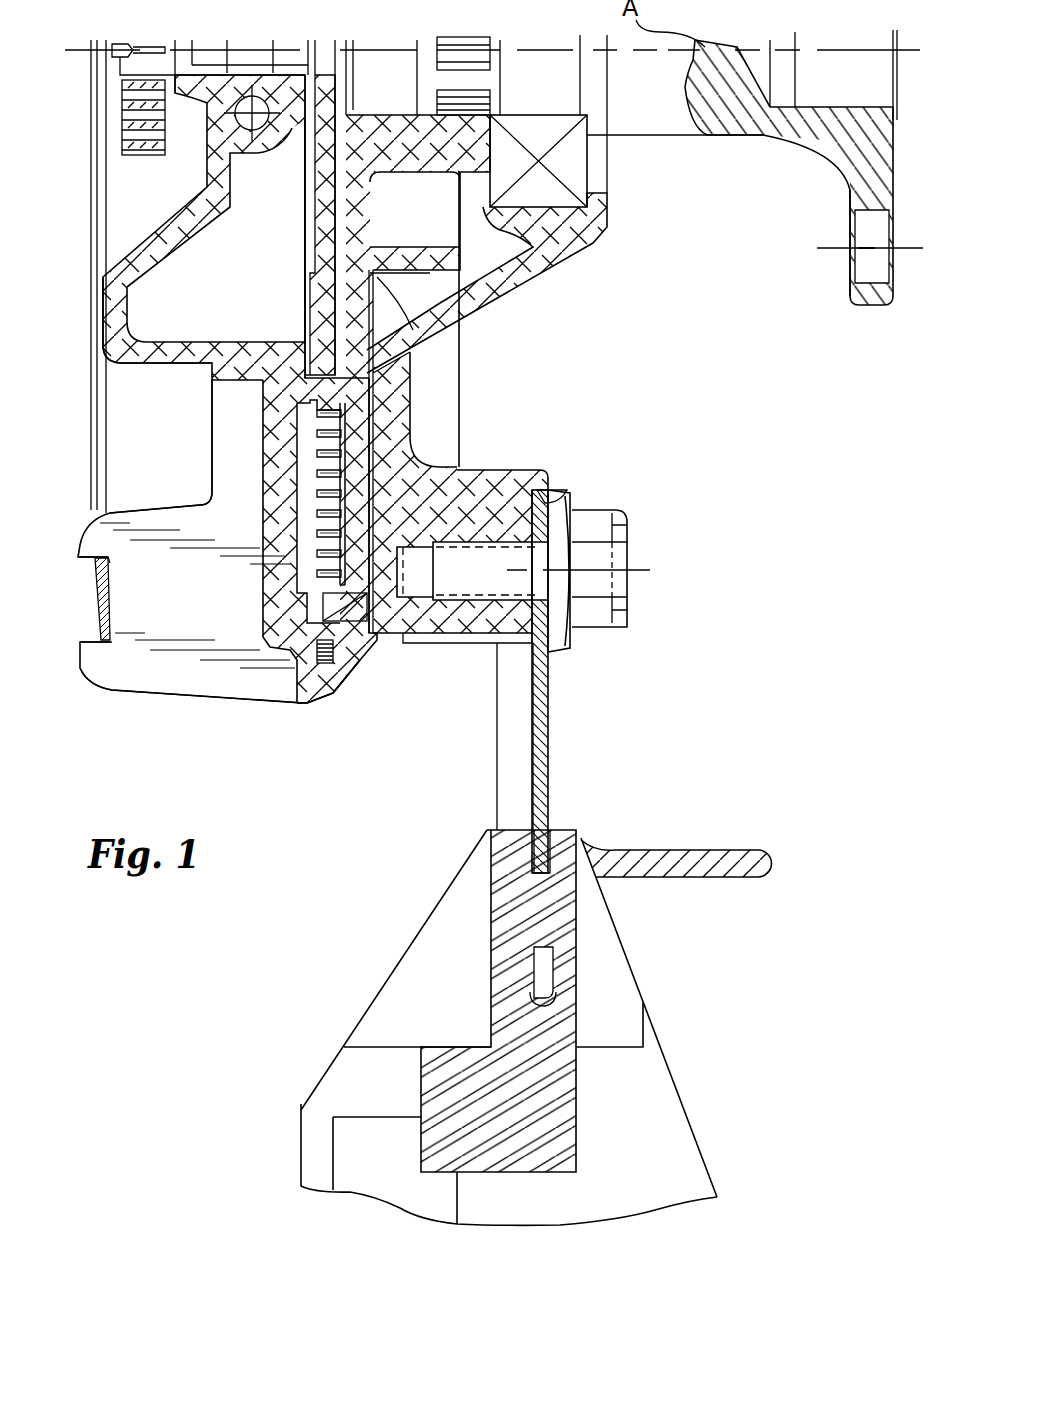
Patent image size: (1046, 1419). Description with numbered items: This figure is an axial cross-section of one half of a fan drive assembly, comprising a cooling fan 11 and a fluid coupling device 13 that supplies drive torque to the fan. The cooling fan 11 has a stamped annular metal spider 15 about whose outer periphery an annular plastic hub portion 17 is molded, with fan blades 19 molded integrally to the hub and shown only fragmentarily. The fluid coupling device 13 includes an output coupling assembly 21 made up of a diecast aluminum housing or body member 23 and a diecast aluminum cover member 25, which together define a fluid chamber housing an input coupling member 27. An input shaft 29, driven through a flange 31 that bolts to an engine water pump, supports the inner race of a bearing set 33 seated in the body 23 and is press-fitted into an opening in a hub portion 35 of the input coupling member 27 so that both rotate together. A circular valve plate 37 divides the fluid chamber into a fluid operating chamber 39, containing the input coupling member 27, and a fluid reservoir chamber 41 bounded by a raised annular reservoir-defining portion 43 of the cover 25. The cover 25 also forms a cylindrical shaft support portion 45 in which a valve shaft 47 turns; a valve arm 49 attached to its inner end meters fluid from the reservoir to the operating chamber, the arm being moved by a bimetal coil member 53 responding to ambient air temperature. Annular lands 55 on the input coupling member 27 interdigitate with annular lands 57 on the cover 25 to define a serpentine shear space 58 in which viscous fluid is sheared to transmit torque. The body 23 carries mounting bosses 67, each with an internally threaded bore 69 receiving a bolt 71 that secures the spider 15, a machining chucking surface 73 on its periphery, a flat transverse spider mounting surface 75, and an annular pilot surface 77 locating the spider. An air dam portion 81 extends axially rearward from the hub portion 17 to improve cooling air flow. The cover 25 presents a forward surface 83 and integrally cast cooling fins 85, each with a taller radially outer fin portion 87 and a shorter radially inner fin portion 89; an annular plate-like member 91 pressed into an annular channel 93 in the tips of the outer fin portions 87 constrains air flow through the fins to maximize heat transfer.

The cooling fan 11 is at (704, 1056).
The fluid coupling device 13 is at (728, 362).
The spider 15 is at (543, 712).
The hub portion 17 is at (514, 936).
The fan blades 19 is at (660, 1180).
The output coupling assembly 21 is at (365, 698).
The housing (body) member 23 is at (547, 270).
The cover member 25 is at (263, 500).
The input coupling member 27 is at (413, 330).
The input shaft 29 is at (745, 128).
The flange 31 is at (874, 303).
The bearing set 33 is at (582, 165).
The hub portion of input coupling member 35 is at (387, 115).
The valve plate 37 is at (310, 237).
The fluid operating chamber 39 is at (473, 262).
The fluid reservoir chamber 41 is at (208, 316).
The reservoir-defining portion 43 is at (162, 362).
The shaft support portion 45 is at (291, 77).
The valve shaft 47 is at (205, 58).
The valve arm 49 is at (296, 140).
The bimetal coil member 53 is at (143, 157).
The annular lands of input coupling member 55 is at (320, 440).
The annular lands of cover 57 is at (388, 432).
The shear space 58 is at (263, 603).
The mounting bosses 67 is at (500, 470).
The internally threaded bore 69 is at (447, 627).
The bolt 71 is at (600, 577).
The machining chucking surface 73 is at (520, 643).
The spider mounting surface 75 is at (572, 622).
The pilot surface 77 is at (550, 490).
The air dam portion 81 is at (686, 858).
The forward surface of cover 83 is at (297, 673).
The cooling fins 85 is at (77, 643).
The radially outer fin portion 87 is at (210, 673).
The radially inner fin portion 89 is at (233, 467).
The annular plate-like member 91 is at (97, 583).
The annular channel 93 is at (93, 637).